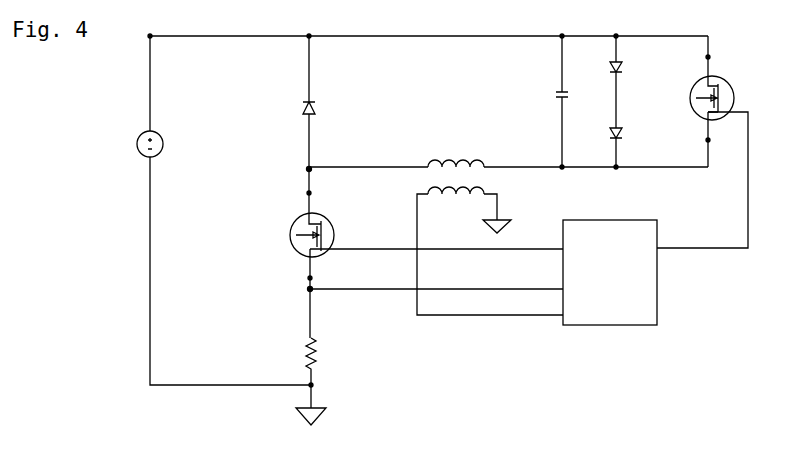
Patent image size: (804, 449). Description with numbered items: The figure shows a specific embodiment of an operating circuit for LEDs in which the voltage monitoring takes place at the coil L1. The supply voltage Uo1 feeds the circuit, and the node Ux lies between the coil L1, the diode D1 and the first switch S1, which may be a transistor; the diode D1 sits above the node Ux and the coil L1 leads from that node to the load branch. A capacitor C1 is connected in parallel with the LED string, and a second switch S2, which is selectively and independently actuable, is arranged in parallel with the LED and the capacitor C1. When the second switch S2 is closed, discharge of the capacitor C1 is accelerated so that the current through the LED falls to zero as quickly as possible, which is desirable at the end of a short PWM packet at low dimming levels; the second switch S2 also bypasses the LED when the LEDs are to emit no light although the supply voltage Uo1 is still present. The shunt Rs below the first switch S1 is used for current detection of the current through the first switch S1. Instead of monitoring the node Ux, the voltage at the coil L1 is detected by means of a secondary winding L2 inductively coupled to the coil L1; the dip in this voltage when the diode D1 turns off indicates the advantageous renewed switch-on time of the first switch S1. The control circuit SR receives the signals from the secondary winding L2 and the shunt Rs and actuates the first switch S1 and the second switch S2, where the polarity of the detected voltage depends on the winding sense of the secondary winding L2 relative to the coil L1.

The supply voltage Uo1 is at (136, 144).
The diode D1 is at (321, 102).
The node Ux is at (356, 169).
The first switch S1 is at (416, 275).
The coil L1 is at (456, 154).
The secondary winding L2 is at (490, 251).
The capacitor C1 is at (571, 101).
The LEDs LED is at (631, 101).
The second switch S2 is at (702, 142).
The control circuit SR is at (610, 272).
The shunt Rs is at (305, 381).